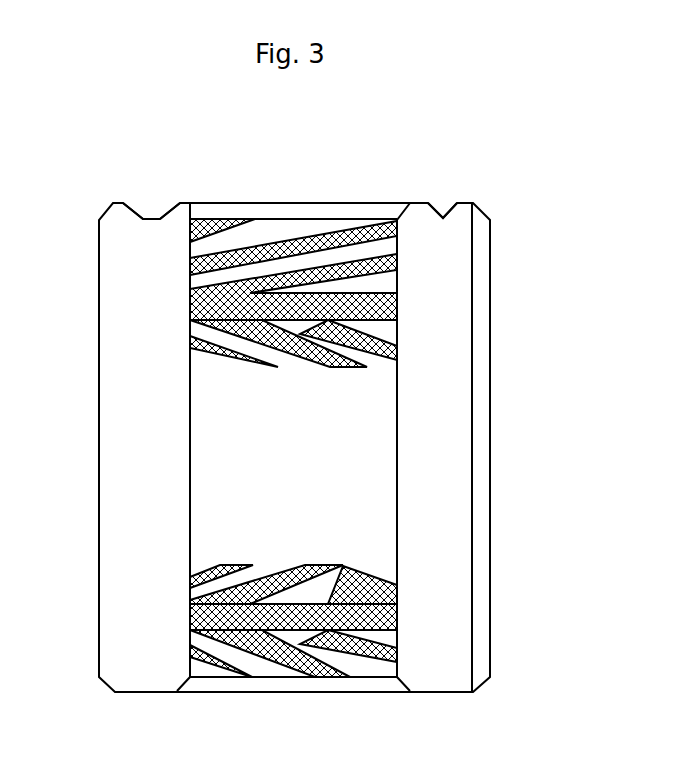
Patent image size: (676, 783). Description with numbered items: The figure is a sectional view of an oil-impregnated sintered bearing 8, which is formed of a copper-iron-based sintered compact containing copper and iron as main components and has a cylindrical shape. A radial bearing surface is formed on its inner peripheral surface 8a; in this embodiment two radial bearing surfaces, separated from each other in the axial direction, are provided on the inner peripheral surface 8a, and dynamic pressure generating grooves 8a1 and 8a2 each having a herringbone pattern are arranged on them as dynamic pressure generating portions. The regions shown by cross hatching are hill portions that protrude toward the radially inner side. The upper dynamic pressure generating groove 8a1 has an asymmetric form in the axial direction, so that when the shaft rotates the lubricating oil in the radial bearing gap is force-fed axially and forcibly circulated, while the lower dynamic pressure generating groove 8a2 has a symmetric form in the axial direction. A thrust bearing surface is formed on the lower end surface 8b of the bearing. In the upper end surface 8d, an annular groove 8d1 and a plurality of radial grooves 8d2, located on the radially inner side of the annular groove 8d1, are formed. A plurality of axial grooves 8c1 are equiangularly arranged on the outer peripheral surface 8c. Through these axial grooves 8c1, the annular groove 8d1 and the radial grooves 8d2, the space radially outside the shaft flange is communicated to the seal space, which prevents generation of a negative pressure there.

The oil-impregnated sintered bearing 8 is at (510, 181).
The inner peripheral surface 8a is at (398, 438).
The dynamic pressure generating groove 8a1 is at (335, 248).
The dynamic pressure generating groove 8a2 is at (363, 580).
The lower end surface 8b is at (147, 692).
The outer peripheral surface 8c is at (490, 548).
The axial groove 8c1 is at (472, 602).
The upper end surface 8d is at (463, 203).
The annular groove 8d1 is at (143, 215).
The radial groove 8d2 is at (167, 219).